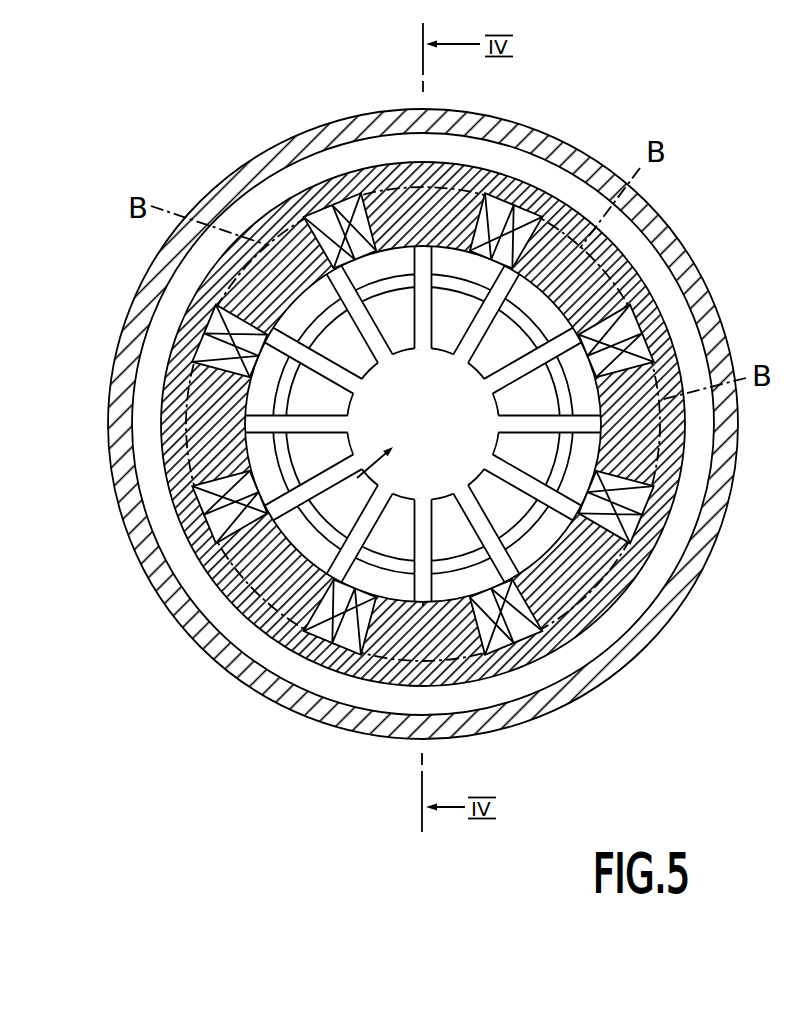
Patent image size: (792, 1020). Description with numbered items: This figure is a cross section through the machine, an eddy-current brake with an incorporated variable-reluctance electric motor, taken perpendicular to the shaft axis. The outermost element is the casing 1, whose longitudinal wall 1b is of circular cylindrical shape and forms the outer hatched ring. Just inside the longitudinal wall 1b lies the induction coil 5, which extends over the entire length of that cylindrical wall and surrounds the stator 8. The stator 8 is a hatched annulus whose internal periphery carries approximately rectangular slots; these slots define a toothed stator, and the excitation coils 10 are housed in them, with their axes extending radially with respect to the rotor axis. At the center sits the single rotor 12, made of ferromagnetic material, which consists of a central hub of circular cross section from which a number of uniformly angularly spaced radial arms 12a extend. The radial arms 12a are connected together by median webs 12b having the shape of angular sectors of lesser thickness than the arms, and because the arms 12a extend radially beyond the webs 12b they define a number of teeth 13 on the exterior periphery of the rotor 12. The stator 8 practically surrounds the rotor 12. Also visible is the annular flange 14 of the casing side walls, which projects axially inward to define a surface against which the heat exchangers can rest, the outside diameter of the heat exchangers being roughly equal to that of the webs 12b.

The casing 1 is at (701, 588).
The longitudinal wall 1b is at (657, 227).
The induction coil 5 is at (675, 307).
The stator 8 is at (398, 177).
The excitation coils 10 is at (347, 200).
The rotor 12 is at (426, 517).
The radial arms 12a is at (305, 428).
The median webs 12b is at (535, 452).
The teeth 13 is at (307, 300).
The annular flange 14 is at (273, 458).